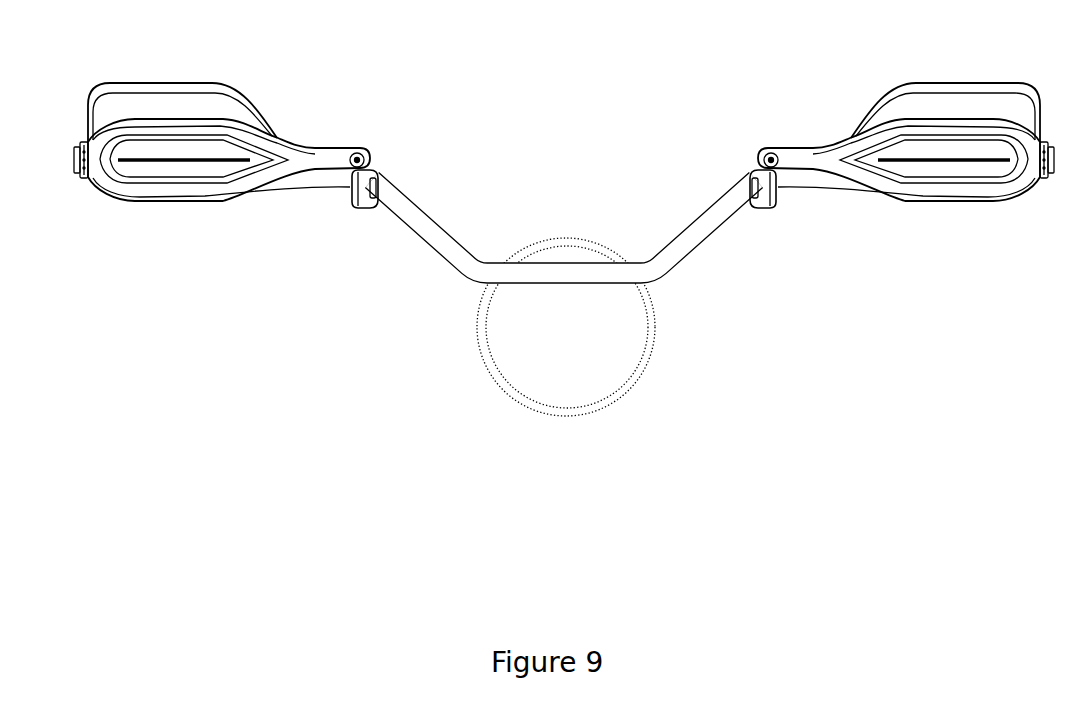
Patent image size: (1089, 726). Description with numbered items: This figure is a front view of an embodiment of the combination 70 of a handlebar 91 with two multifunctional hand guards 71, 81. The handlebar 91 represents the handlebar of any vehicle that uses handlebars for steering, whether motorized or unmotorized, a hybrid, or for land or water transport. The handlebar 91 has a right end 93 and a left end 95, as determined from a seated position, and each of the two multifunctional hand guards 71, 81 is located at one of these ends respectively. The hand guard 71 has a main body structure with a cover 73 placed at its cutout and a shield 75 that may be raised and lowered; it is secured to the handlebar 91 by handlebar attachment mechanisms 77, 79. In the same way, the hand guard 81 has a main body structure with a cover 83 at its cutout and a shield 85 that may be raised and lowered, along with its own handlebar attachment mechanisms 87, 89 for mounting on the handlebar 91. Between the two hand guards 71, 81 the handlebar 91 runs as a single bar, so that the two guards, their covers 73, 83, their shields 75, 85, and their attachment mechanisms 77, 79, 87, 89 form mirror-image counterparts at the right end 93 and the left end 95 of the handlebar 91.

The handlebar assembly 70 is at (563, 223).
The multifunctional hand guard 71 is at (167, 130).
The cover 73 is at (173, 172).
The shield 75 is at (203, 90).
The handlebar attachment mechanism 77 is at (81, 177).
The handlebar attachment mechanism 79 is at (378, 173).
The handlebar 91 is at (402, 204).
The right end 93 is at (75, 160).
The multifunctional hand guard 81 is at (858, 147).
The cover 83 is at (957, 172).
The shield 85 is at (953, 93).
The handlebar attachment mechanism 87 is at (1048, 152).
The handlebar attachment mechanism 89 is at (772, 198).
The left end 95 is at (1058, 163).